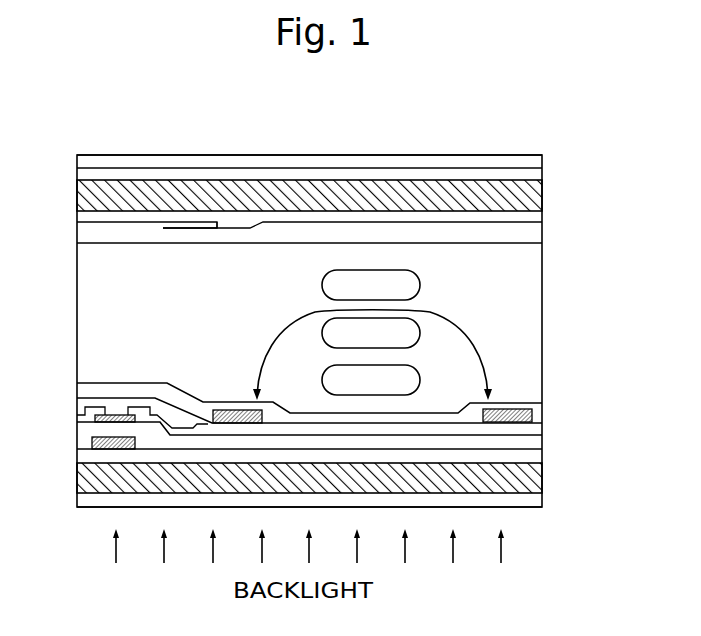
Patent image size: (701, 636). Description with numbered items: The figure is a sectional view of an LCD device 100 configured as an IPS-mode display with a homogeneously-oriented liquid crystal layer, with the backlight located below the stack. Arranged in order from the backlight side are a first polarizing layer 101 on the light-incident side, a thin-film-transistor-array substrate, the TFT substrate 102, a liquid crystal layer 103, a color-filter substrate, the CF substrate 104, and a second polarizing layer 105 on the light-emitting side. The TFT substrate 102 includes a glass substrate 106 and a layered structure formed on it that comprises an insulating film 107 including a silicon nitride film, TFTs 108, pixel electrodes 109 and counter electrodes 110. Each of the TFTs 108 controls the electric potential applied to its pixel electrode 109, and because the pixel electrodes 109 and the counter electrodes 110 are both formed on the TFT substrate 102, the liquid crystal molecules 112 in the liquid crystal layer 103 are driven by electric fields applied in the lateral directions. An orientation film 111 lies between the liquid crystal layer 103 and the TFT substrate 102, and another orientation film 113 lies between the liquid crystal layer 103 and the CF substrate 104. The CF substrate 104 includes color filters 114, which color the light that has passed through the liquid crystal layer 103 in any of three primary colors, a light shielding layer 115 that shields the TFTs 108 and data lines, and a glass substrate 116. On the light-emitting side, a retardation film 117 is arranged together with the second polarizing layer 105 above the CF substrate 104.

The LCD device 100 is at (559, 113).
The first polarizing layer 101 is at (542, 497).
The TFT substrate 102 is at (72, 417).
The liquid crystal layer 103 is at (72, 247).
The CF substrate 104 is at (72, 182).
The second polarizing layer 105 is at (542, 157).
The glass substrate 106 is at (542, 478).
The insulating film 107 is at (546, 423).
The TFTs 108 is at (113, 416).
The pixel electrodes 109 is at (238, 409).
The counter electrodes 110 is at (542, 413).
The orientation film 111 is at (542, 403).
The liquid crystal molecules 112 is at (420, 285).
The orientation film 113 is at (542, 228).
The color filters 114 is at (542, 221).
The light shielding layer 115 is at (190, 261).
The glass substrate 116 is at (542, 195).
The retardation film 117 is at (542, 170).